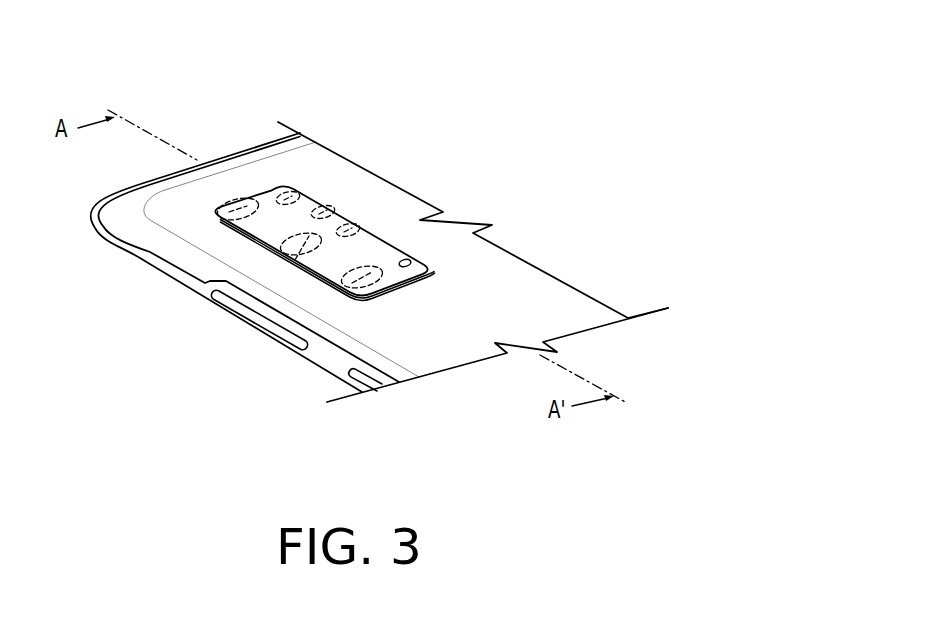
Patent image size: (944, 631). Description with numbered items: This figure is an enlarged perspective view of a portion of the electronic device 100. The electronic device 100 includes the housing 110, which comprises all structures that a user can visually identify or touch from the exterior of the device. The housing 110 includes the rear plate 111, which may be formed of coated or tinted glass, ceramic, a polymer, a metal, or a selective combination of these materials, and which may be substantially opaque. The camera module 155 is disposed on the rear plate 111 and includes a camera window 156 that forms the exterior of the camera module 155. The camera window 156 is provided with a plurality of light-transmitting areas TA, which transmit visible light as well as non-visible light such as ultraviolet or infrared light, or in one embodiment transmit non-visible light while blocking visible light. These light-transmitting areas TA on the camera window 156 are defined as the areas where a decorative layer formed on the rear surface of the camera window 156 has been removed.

The electronic device 100 is at (358, 215).
The housing 110 is at (189, 281).
The rear plate 111 is at (523, 292).
The camera module 155 is at (247, 187).
The camera window 156 is at (372, 230).
The light-transmitting areas TA is at (360, 232).